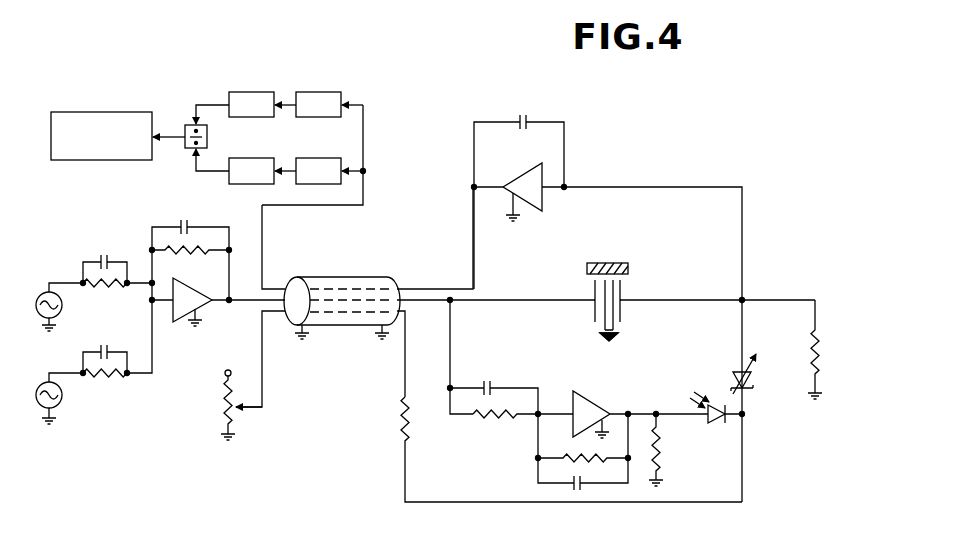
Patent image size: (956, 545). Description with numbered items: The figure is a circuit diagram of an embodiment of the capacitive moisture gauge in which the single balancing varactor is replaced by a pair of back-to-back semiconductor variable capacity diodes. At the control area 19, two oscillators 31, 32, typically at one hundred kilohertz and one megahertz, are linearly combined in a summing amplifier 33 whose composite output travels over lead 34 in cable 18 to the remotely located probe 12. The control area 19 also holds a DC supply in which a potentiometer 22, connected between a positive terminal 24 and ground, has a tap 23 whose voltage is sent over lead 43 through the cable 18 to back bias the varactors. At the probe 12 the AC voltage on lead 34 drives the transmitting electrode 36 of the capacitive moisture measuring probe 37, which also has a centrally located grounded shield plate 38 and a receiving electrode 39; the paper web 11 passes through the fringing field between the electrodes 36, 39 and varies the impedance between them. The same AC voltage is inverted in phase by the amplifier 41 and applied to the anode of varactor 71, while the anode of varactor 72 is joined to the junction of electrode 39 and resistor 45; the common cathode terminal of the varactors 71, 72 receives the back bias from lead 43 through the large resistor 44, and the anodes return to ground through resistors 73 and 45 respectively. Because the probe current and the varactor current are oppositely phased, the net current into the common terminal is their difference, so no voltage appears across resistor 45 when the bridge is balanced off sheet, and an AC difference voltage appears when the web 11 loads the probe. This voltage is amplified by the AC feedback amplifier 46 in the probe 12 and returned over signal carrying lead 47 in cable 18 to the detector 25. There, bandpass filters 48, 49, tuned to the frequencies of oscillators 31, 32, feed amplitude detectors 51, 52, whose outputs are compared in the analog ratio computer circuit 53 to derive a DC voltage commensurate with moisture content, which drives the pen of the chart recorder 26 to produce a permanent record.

The web 11 is at (620, 263).
The probe 12 is at (504, 259).
The cable 18 is at (347, 276).
The control area 19 is at (77, 229).
The potentiometer 22 is at (227, 414).
The tap 23 is at (247, 408).
The terminal 24 is at (227, 369).
The detector 25 is at (285, 91).
The chart recorder 26 is at (120, 112).
The oscillator 31 is at (38, 296).
The oscillator 32 is at (62, 392).
The summing amplifier 33 is at (164, 319).
The lead 34 is at (264, 298).
The transmitting electrode 36 is at (595, 318).
The capacitive moisture measuring probe 37 is at (577, 290).
The grounded shield plate 38 is at (613, 333).
The receiving electrode 39 is at (620, 318).
The phase inverting amplifier 41 is at (574, 382).
The lead 43 is at (272, 314).
The resistor 44 is at (399, 432).
The resistor 45 is at (820, 356).
The AC feedback amplifier 46 is at (583, 166).
The signal carrying lead 47 is at (265, 259).
The bandpass filter 48 is at (318, 158).
The bandpass filter 49 is at (334, 92).
The amplitude detector 51 is at (242, 92).
The amplitude detector 52 is at (252, 158).
The analog ratio computer circuit 53 is at (192, 125).
The varactor 71 is at (708, 426).
The varactor 72 is at (752, 378).
The resistor 73 is at (662, 452).